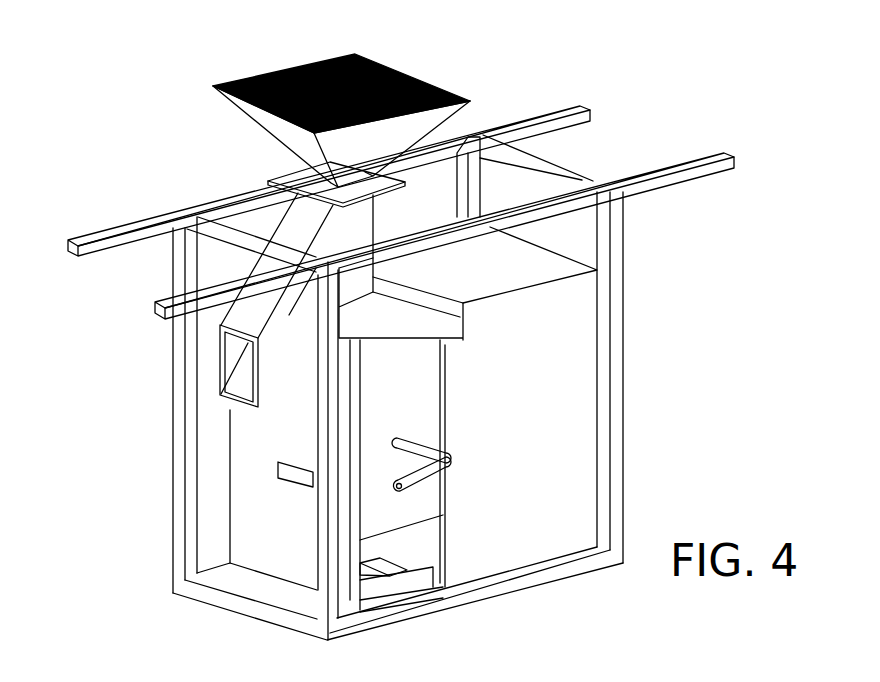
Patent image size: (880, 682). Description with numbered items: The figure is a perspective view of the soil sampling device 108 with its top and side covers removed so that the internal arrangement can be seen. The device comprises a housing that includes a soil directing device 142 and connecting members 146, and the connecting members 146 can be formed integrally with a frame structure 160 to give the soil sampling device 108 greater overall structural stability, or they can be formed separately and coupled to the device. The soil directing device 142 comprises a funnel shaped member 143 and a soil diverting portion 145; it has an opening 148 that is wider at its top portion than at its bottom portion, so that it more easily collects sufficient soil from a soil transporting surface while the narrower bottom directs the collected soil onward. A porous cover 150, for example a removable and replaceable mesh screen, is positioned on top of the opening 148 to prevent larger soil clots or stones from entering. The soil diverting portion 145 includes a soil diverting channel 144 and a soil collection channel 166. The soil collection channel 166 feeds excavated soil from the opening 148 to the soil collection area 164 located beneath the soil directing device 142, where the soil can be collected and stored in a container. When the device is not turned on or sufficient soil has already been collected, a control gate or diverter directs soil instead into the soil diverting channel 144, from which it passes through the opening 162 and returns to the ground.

The soil sampling device 108 is at (166, 118).
The soil directing device 142 is at (465, 110).
The funnel shaped member 143 is at (283, 143).
The soil diverting channel 144 is at (272, 357).
The soil diverting portion 145 is at (358, 216).
The connecting members 146 is at (100, 230).
The opening 148 is at (397, 71).
The porous cover 150 is at (297, 67).
The frame structure 160 is at (621, 399).
The opening 162 is at (228, 358).
The soil collection area 164 is at (375, 493).
The soil collection channel 166 is at (357, 277).